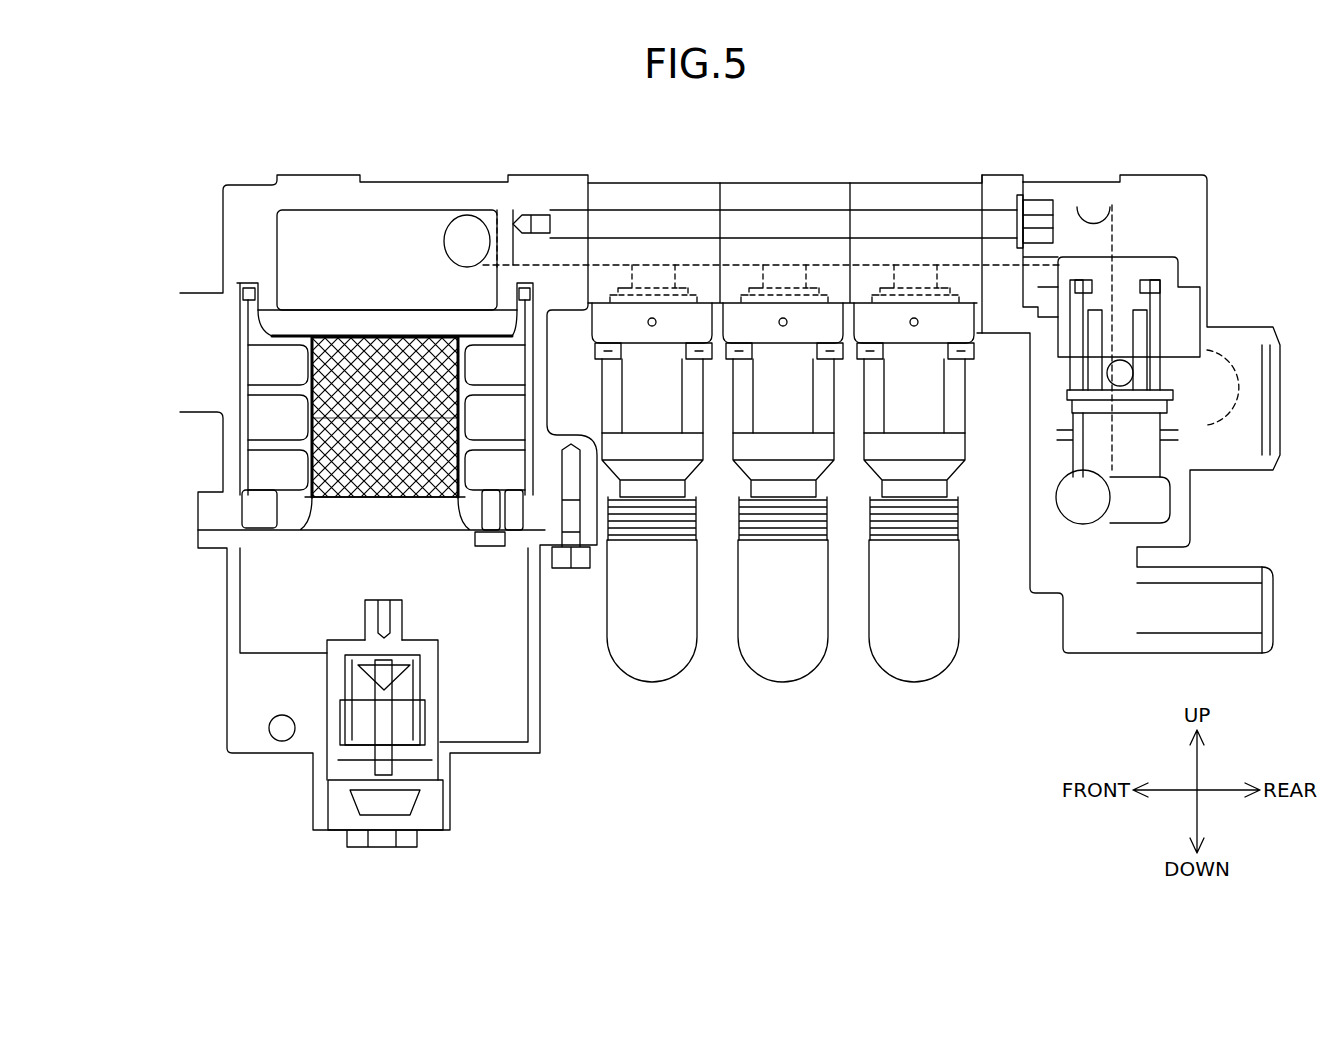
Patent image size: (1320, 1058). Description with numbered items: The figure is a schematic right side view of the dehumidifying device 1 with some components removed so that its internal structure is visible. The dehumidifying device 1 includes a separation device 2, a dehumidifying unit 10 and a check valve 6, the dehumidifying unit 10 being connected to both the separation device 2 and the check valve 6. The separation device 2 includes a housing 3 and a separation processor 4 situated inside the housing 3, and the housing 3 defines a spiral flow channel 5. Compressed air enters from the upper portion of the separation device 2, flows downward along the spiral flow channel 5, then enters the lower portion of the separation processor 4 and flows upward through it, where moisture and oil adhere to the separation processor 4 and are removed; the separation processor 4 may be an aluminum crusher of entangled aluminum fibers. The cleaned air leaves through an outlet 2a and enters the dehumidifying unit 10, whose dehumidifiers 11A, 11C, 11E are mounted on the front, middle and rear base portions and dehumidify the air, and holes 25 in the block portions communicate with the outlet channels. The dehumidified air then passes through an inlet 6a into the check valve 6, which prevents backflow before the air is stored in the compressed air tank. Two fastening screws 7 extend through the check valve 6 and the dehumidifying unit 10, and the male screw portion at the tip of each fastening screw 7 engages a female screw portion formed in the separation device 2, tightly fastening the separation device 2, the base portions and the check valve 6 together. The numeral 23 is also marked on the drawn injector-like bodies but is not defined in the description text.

The dehumidifying device 1 is at (995, 813).
The separation device 2 is at (154, 614).
The outlet 2a is at (533, 258).
The housing 3 is at (234, 246).
The separation processor 4 is at (312, 470).
The spiral flow channel 5 is at (258, 372).
The check valve 6 is at (1253, 222).
The inlet 6a is at (1107, 210).
The fastening screw 7 is at (990, 213).
The dehumidifying unit 10 is at (623, 770).
The dehumidifier 11A is at (652, 684).
The dehumidifier 11C is at (781, 684).
The dehumidifier 11E is at (911, 684).
The injector body 23 is at (613, 262).
The hole 25 is at (672, 278).